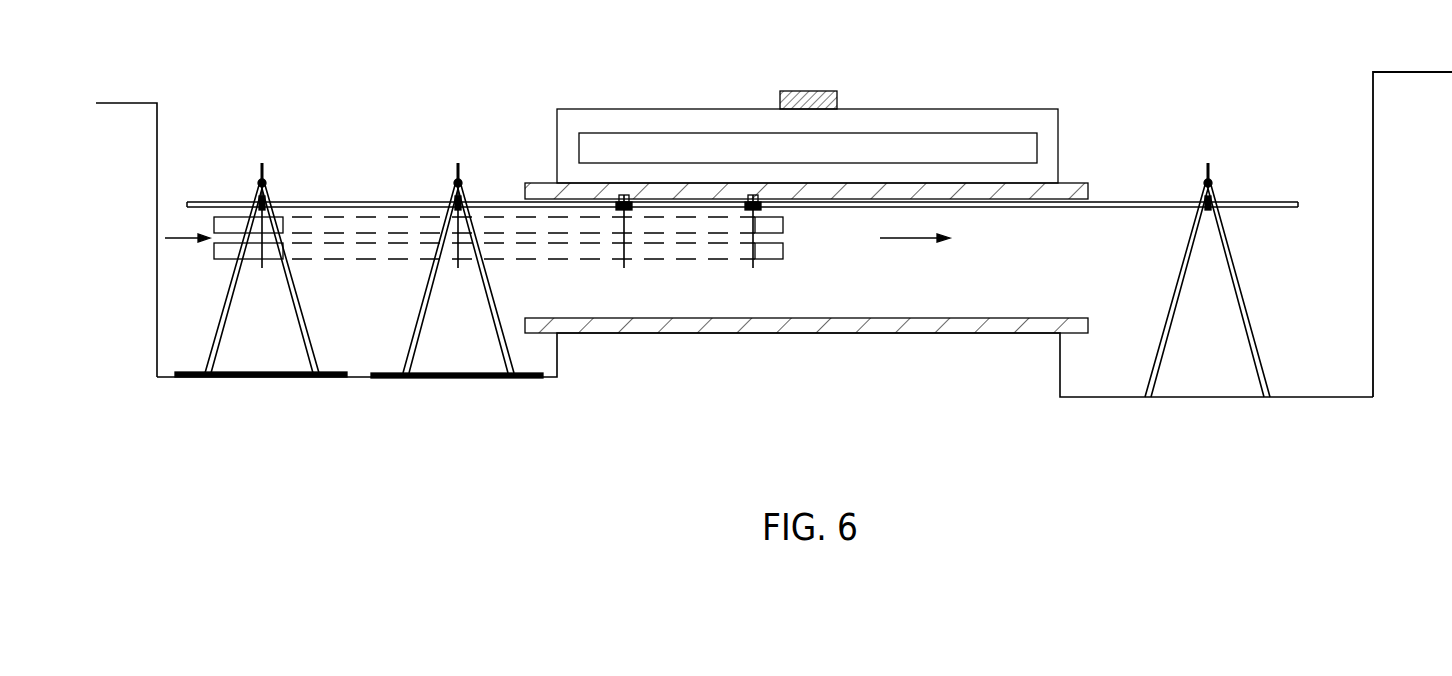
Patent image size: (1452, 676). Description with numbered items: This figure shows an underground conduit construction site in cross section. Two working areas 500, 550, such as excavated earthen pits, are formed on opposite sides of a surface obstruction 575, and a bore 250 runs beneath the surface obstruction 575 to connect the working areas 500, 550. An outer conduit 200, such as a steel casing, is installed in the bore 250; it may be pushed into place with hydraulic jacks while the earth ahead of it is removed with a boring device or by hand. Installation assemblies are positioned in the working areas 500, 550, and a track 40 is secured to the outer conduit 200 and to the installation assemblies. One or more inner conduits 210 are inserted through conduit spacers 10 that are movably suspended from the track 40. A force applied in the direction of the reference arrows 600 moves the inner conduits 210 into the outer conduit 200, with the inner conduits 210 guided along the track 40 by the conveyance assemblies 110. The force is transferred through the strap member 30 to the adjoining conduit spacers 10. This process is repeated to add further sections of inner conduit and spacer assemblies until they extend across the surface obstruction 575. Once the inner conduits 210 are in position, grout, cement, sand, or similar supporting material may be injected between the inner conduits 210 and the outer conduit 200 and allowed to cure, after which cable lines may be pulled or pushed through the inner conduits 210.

The working area 500 is at (157, 125).
The working area 550 is at (1373, 112).
The conveyance assembly 110 is at (196, 211).
The track 40 is at (307, 202).
The strap member 30 is at (361, 206).
The conduit spacer 10 is at (262, 268).
The reference arrow 600 is at (177, 238).
The surface obstruction 575 is at (814, 91).
The outer conduit 200 is at (1085, 183).
The bore 250 is at (1000, 334).
The inner conduit 210 is at (783, 224).